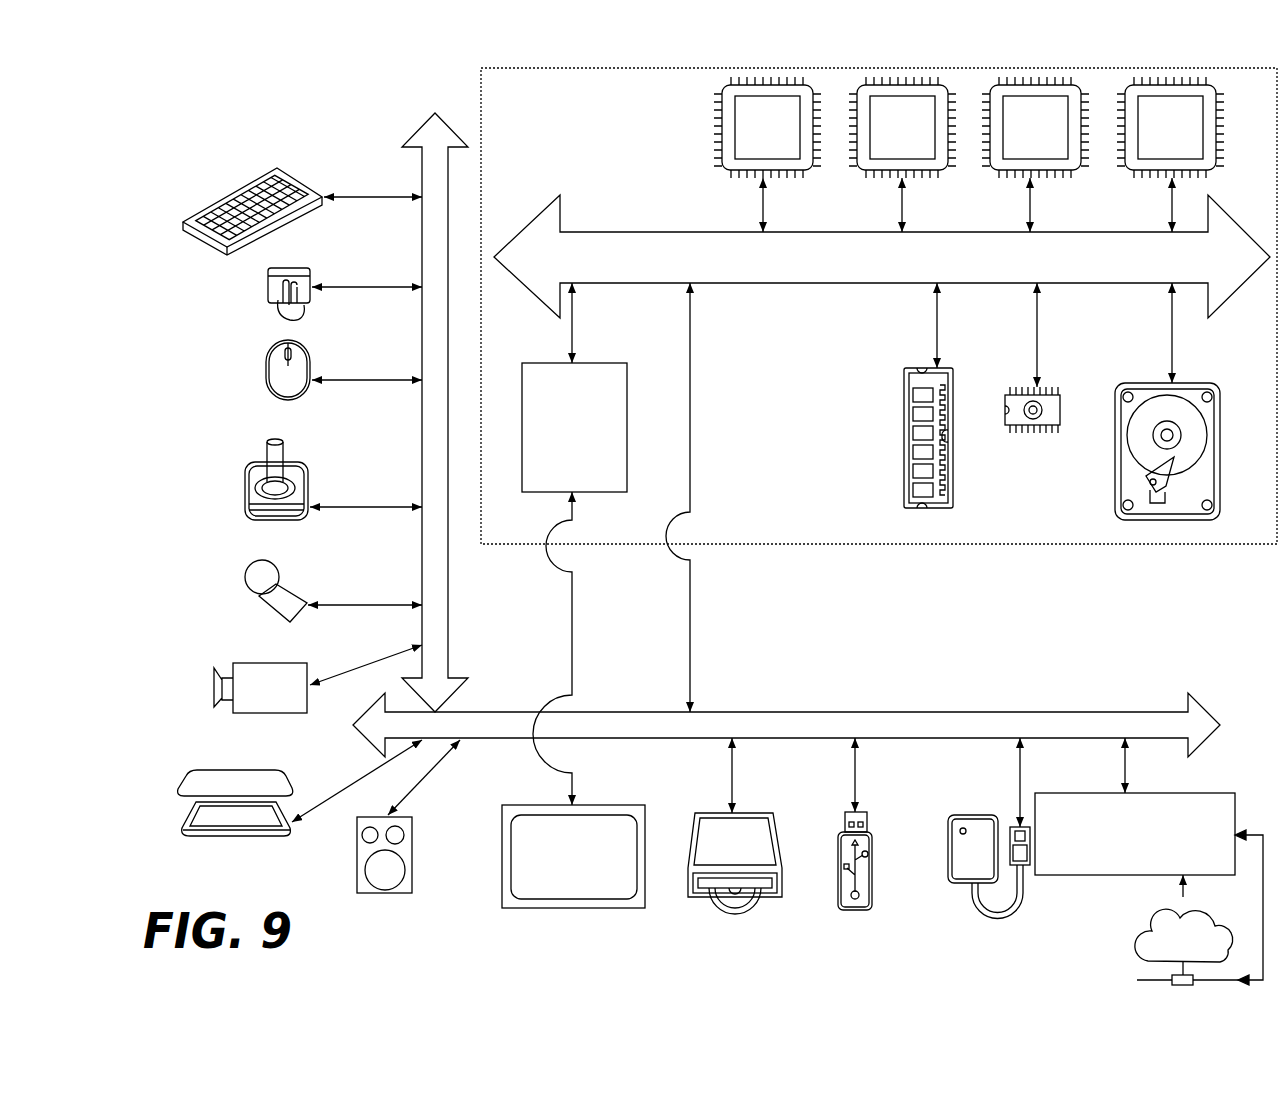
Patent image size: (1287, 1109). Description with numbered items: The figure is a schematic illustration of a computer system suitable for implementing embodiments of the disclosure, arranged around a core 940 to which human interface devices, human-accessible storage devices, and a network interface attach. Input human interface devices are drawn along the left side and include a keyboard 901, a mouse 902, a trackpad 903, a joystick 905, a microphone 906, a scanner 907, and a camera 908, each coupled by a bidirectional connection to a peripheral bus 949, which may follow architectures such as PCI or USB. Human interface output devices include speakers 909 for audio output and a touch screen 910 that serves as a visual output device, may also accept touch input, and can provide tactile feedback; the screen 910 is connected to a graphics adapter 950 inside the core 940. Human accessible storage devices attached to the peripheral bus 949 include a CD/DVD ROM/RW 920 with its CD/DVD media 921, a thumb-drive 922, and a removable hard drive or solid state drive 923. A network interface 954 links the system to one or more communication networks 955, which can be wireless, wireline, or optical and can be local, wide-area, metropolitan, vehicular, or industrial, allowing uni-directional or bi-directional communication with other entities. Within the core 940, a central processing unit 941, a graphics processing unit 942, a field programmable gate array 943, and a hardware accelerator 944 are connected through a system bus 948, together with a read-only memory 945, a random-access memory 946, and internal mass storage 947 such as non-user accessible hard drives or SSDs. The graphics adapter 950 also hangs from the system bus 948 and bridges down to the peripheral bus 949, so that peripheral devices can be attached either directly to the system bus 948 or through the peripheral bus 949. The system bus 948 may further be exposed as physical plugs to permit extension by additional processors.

The keyboard 901 is at (183, 224).
The mouse 902 is at (265, 372).
The trackpad 903 is at (268, 290).
The joystick 905 is at (245, 505).
The microphone 906 is at (243, 575).
The scanner 907 is at (180, 830).
The camera 908 is at (215, 690).
The speakers 909 is at (387, 895).
The touch screen 910 is at (572, 910).
The CD/DVD ROM/RW 920 is at (775, 897).
The CD/DVD media 921 is at (717, 902).
The thumb-drive 922 is at (860, 912).
The removable hard drive or solid state drive 923 is at (958, 885).
The core 940 is at (873, 544).
The central processing unit 941 is at (753, 147).
The graphics processing unit 942 is at (888, 147).
The field programmable gate array 943 is at (1021, 147).
The hardware accelerator 944 is at (1156, 147).
The read-only memory 945 is at (1028, 435).
The random-access memory 946 is at (904, 462).
The internal mass storage 947 is at (1128, 383).
The system bus 948 is at (952, 267).
The peripheral bus 949 is at (422, 150).
The graphics adapter 950 is at (560, 466).
The network interface 954 is at (1121, 860).
The communication network 955 is at (1140, 948).